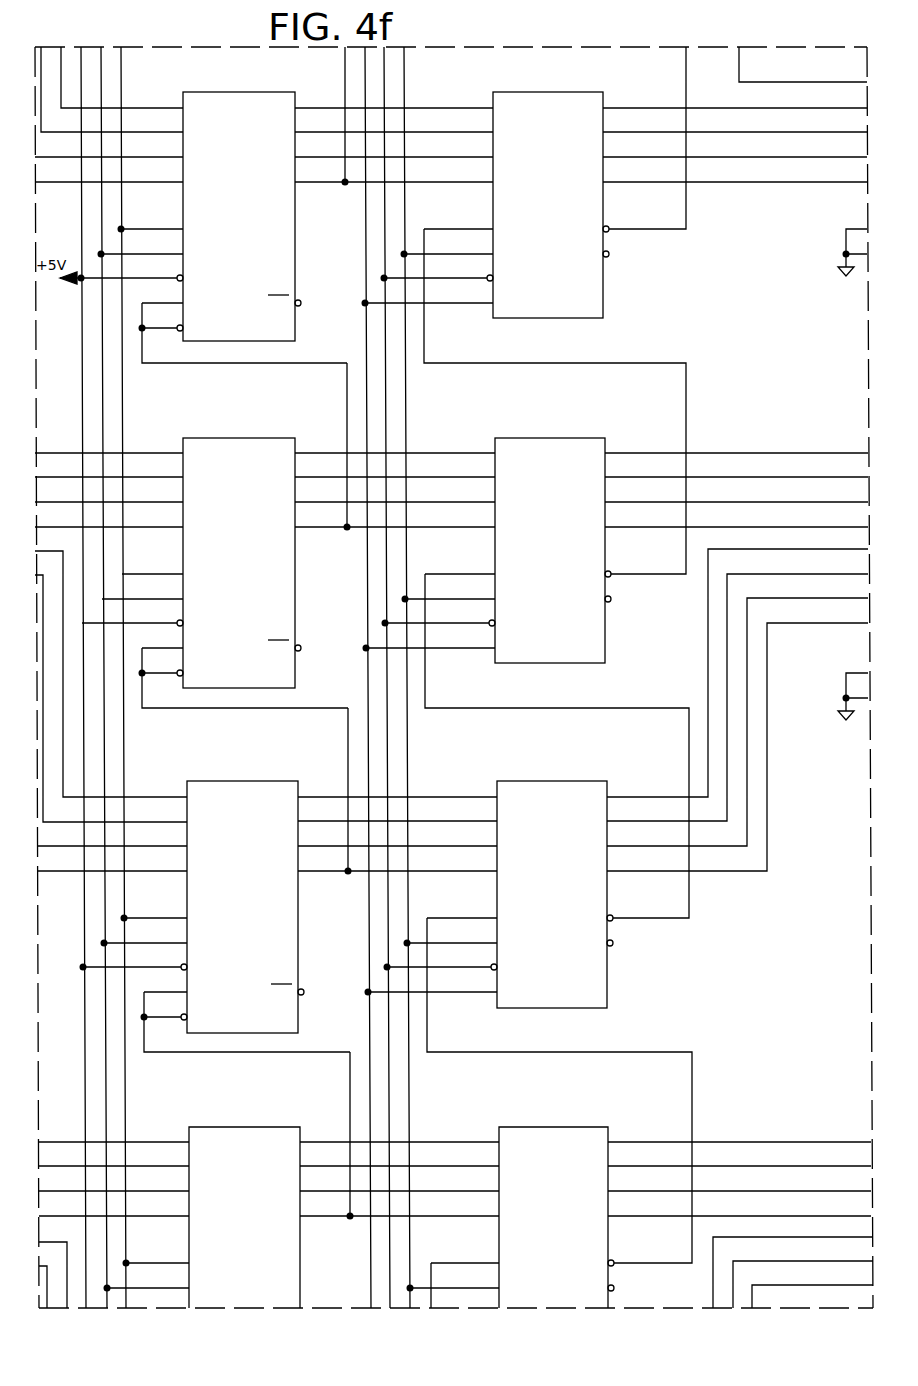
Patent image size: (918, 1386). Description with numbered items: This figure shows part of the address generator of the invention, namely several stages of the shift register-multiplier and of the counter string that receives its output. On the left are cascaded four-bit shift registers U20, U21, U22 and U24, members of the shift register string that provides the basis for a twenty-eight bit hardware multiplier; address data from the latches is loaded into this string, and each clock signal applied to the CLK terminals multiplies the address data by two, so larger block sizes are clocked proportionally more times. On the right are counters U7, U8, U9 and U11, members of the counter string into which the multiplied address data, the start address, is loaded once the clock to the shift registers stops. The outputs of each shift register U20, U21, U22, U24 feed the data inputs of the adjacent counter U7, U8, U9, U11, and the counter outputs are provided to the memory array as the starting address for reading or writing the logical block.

The 4 bit shift register U20 is at (264, 206).
The 4 bit shift register U21 is at (265, 552).
The 4 bit shift register U22 is at (267, 896).
The 4 bit shift register U24 is at (269, 1197).
The counter U7 is at (496, 183).
The counter U8 is at (498, 530).
The counter U9 is at (500, 874).
The counter U11 is at (521, 1197).